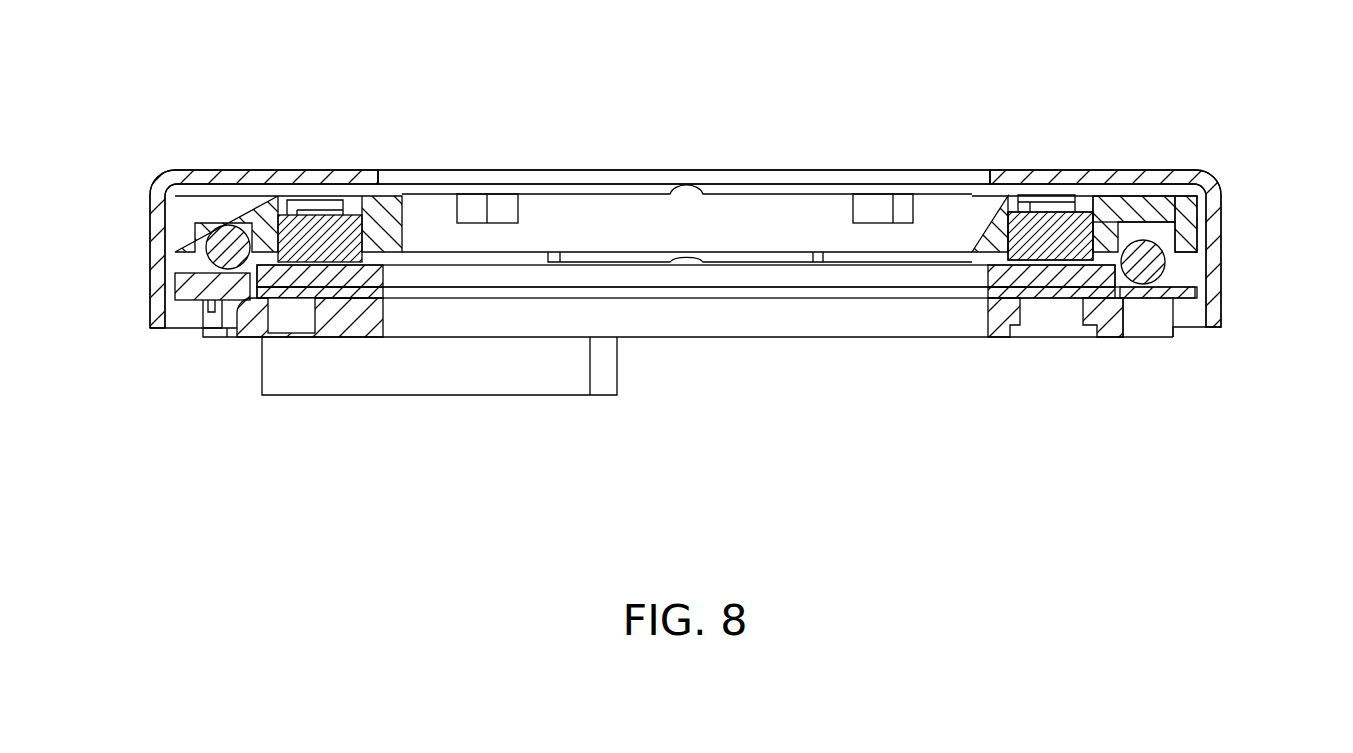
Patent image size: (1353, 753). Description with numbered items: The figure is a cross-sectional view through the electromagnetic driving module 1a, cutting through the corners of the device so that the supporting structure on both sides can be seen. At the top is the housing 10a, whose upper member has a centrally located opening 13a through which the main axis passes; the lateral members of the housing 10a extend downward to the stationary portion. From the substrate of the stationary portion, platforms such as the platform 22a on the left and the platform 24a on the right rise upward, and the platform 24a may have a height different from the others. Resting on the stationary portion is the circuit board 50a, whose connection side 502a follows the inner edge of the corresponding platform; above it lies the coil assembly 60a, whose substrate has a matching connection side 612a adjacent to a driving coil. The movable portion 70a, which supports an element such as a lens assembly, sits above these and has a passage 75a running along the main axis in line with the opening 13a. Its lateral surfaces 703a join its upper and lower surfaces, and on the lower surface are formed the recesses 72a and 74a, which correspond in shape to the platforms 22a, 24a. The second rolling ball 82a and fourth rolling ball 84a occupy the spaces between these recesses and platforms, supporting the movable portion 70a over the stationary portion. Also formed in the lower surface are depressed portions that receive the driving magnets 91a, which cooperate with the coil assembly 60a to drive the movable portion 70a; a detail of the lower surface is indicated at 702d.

The electromagnetic driving module 1a is at (128, 108).
The housing 10a is at (356, 178).
The opening 13a is at (425, 181).
The platform 22a is at (187, 288).
The platform 24a is at (1148, 293).
The circuit board 50a is at (1028, 293).
The coil assembly 60a is at (1093, 272).
The movable portion 70a is at (980, 212).
The recess 72a is at (202, 230).
The recess 74a is at (1152, 223).
The passage 75a is at (558, 220).
The second rolling ball 82a is at (205, 243).
The fourth rolling ball 84a is at (1165, 262).
The driving magnet 91a is at (1037, 230).
The connection side 502a is at (244, 300).
The connection side 612a is at (238, 283).
The frame recess 702d is at (979, 253).
The lateral surface 703a is at (1198, 220).